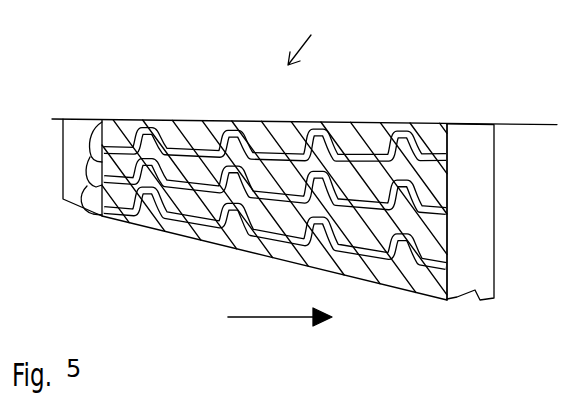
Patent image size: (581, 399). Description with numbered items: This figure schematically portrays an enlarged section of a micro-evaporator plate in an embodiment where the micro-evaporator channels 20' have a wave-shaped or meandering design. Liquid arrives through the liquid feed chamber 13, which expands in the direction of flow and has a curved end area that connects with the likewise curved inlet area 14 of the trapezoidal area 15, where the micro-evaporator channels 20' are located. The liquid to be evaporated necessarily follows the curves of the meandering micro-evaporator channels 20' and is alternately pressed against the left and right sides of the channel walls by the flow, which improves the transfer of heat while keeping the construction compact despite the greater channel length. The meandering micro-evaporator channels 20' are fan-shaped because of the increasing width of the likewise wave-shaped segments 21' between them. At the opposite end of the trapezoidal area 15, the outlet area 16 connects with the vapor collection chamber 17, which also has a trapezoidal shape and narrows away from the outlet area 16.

The liquid feed chamber 13 is at (86, 187).
The inlet area 14 is at (101, 119).
The trapezoidal area 15 is at (305, 39).
The outlet area 16 is at (455, 177).
The vapor collection chamber 17 is at (473, 210).
The micro-evaporator channels 20' is at (275, 217).
The wave-shaped segments 21' is at (274, 169).